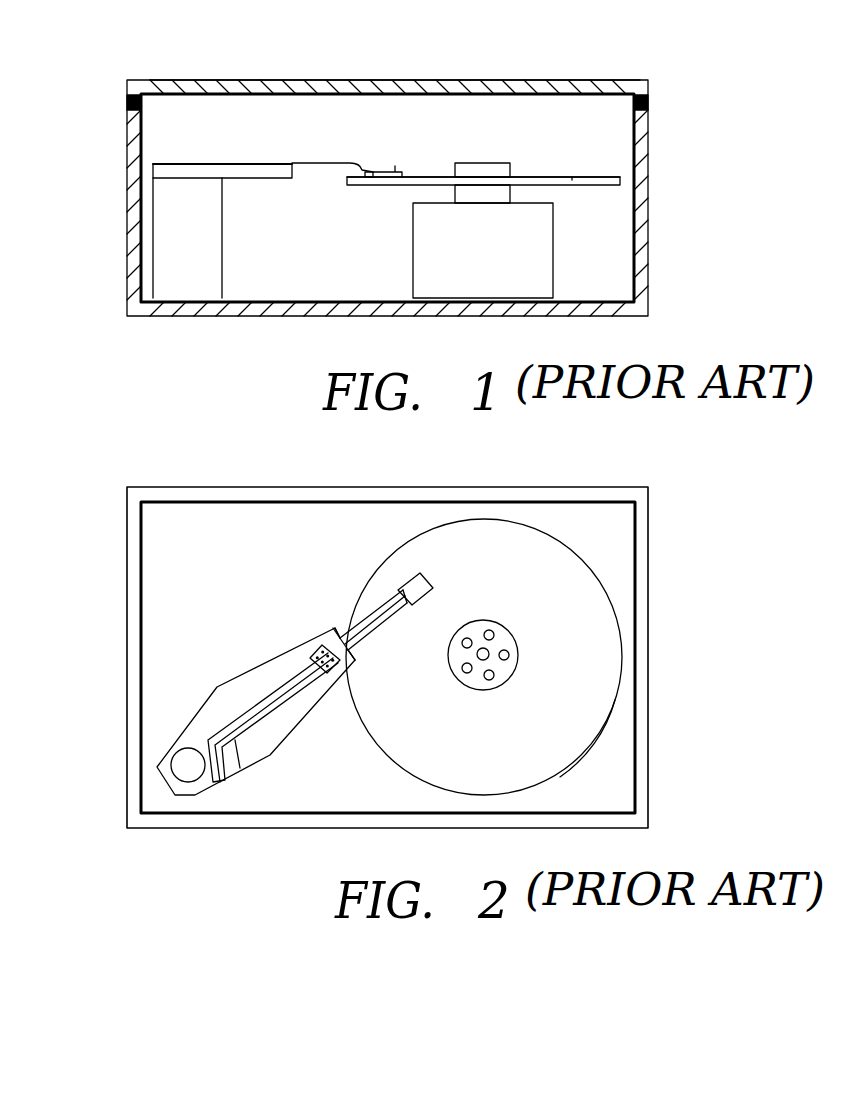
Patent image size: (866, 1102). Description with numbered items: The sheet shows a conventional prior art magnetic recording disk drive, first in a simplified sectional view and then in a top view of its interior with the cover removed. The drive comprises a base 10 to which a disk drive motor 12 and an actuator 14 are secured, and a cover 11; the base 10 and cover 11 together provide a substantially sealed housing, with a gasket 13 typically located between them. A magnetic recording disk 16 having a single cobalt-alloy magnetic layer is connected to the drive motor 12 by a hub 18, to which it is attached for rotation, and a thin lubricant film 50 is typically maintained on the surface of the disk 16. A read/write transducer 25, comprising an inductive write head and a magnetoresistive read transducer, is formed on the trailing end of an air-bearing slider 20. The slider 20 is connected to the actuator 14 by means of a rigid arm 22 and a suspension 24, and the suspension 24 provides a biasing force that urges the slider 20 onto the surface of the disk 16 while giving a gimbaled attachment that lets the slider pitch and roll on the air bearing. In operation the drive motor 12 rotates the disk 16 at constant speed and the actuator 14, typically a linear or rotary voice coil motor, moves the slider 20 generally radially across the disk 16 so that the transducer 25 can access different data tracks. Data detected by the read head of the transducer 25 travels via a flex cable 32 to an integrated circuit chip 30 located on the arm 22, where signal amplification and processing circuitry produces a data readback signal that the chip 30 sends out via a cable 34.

In FIG. 1, the base 10 is at (642, 228).
In FIG. 2, the base 10 is at (645, 575).
In FIG. 1, the cover 11 is at (148, 87).
In FIG. 1, the disk drive motor 12 is at (492, 288).
In FIG. 1, the gasket 13 is at (651, 100).
In FIG. 1, the actuator 14 is at (192, 294).
In FIG. 2, the actuator 14 is at (182, 777).
In FIG. 1, the magnetic recording disk 16 is at (623, 182).
In FIG. 2, the magnetic recording disk 16 is at (608, 720).
In FIG. 1, the hub 18 is at (481, 163).
In FIG. 2, the hub 18 is at (508, 639).
In FIG. 1, the air-bearing slider 20 is at (395, 172).
In FIG. 2, the air-bearing slider 20 is at (415, 577).
In FIG. 1, the rigid arm 22 is at (222, 163).
In FIG. 2, the rigid arm 22 is at (188, 728).
In FIG. 1, the suspension 24 is at (328, 163).
In FIG. 2, the suspension 24 is at (357, 642).
In FIG. 1, the read/write transducer 25 is at (367, 171).
In FIG. 2, the read/write transducer 25 is at (408, 605).
In FIG. 2, the integrated circuit chip 30 is at (312, 654).
In FIG. 2, the flex cable 32 is at (360, 640).
In FIG. 2, the cable 34 is at (240, 768).
In FIG. 1, the lubricant film 50 is at (590, 177).
In FIG. 2, the lubricant film 50 is at (522, 538).